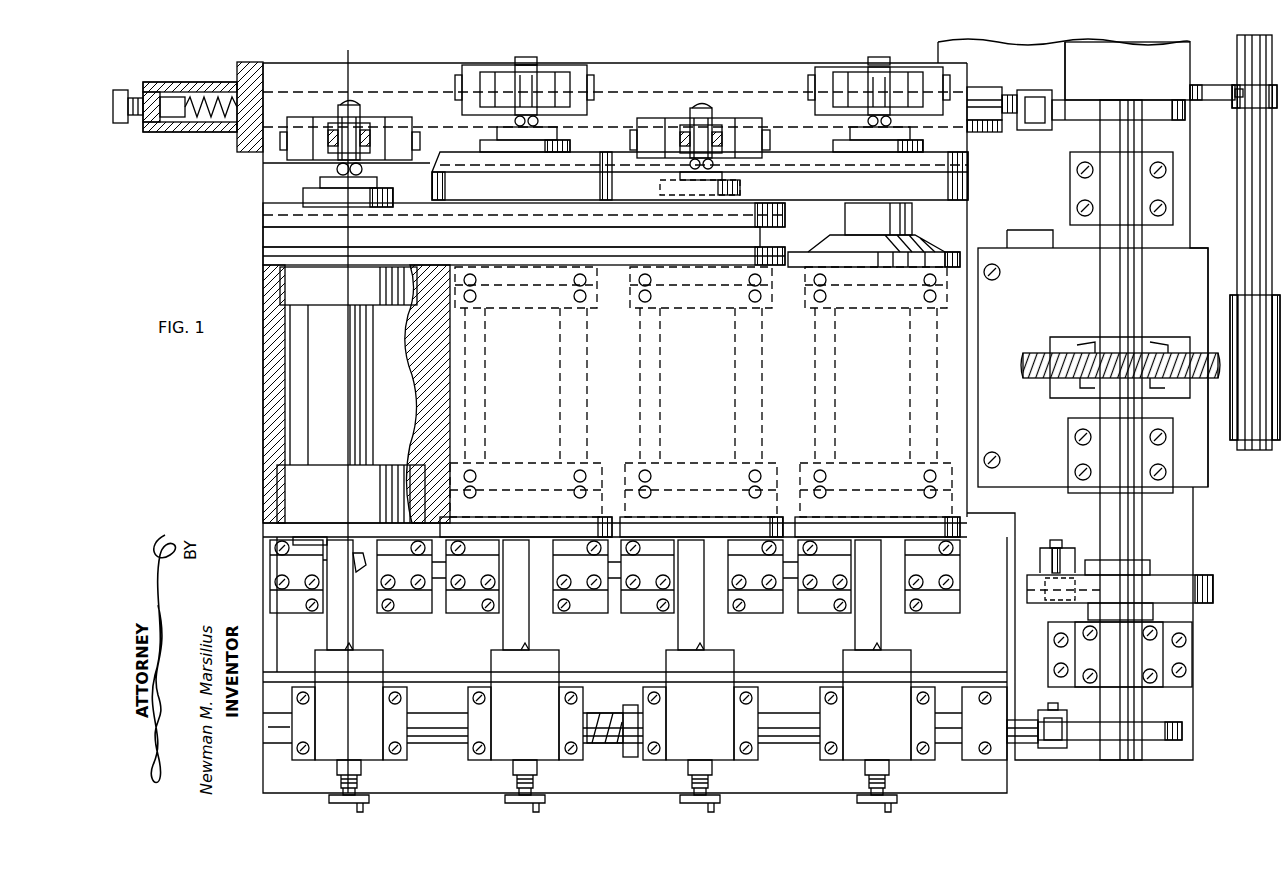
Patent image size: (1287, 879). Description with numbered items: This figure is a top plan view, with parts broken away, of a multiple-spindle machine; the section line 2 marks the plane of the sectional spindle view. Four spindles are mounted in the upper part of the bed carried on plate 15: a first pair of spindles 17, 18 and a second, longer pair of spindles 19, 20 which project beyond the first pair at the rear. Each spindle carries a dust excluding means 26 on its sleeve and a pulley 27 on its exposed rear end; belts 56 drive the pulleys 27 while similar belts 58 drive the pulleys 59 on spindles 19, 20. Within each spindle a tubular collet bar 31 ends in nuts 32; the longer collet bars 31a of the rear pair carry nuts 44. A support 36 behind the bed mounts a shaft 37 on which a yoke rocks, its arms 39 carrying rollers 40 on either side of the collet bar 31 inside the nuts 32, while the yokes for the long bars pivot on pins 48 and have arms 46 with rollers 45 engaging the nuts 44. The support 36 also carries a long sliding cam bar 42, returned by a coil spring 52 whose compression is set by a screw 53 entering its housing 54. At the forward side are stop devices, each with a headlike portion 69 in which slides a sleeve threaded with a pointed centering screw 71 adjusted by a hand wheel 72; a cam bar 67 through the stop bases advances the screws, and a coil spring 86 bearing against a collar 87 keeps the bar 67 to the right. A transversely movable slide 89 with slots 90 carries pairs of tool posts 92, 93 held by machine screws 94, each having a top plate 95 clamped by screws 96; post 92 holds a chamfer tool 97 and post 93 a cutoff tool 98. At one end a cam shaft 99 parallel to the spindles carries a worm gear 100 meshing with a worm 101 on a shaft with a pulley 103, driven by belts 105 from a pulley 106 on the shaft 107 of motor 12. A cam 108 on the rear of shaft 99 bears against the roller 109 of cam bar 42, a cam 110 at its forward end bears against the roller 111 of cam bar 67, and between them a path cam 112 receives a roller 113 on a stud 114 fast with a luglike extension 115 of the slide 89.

The section line 2 is at (340, 57).
The motor 12 is at (1165, 60).
The plate 15 is at (988, 495).
The spindle 17 is at (325, 382).
The spindle 18 is at (715, 368).
The spindle 19 is at (512, 207).
The spindle 20 is at (858, 216).
The dust excluding means 26 is at (268, 256).
The pulley 27 is at (268, 207).
The collet bar 31 is at (349, 106).
The collet bar 31a is at (538, 62).
The nuts 32 is at (365, 122).
The support 36 is at (292, 72).
The shaft 37 is at (421, 142).
The arms 39 is at (300, 117).
The rollers 40 is at (330, 138).
The cam bar 42 is at (255, 85).
The nuts 44 is at (516, 66).
The rollers 45 is at (507, 84).
The arms 46 is at (493, 80).
The pins 48 is at (595, 94).
The coil spring 52 is at (222, 100).
The screw 53 is at (124, 123).
The housing 54 is at (206, 130).
The belts 56 is at (268, 222).
The belts 58 is at (786, 188).
The pulleys 59 is at (602, 155).
The cam bar 67 is at (1025, 735).
The headlike portion 69 is at (330, 705).
The screw 71 is at (361, 784).
The hand wheel 72 is at (330, 800).
The coil spring 86 is at (603, 745).
The collar 87 is at (630, 750).
The slide 89 is at (635, 703).
The slots 90 is at (378, 582).
The tool post 92 is at (298, 598).
The tool post 93 is at (415, 598).
The machine screws 94 is at (312, 605).
The top plates 95 is at (615, 576).
The screws 96 is at (488, 582).
The chamfer tool 97 is at (332, 538).
The cutoff tool 98 is at (360, 553).
The cam shaft 99 is at (1113, 298).
The worm gear 100 is at (1026, 378).
The worm 101 is at (1162, 346).
The pulley 103 is at (1230, 294).
The belts 105 is at (1260, 173).
The pulley 106 is at (1232, 128).
The shaft 107 is at (1223, 102).
The cam 108 is at (1117, 108).
The roller 109 is at (1040, 113).
The cam 110 is at (1143, 732).
The roller 111 is at (1058, 732).
The path cam 112 is at (1177, 582).
The roller 113 is at (1047, 586).
The stud 114 is at (1060, 542).
The luglike extension 115 is at (1037, 560).